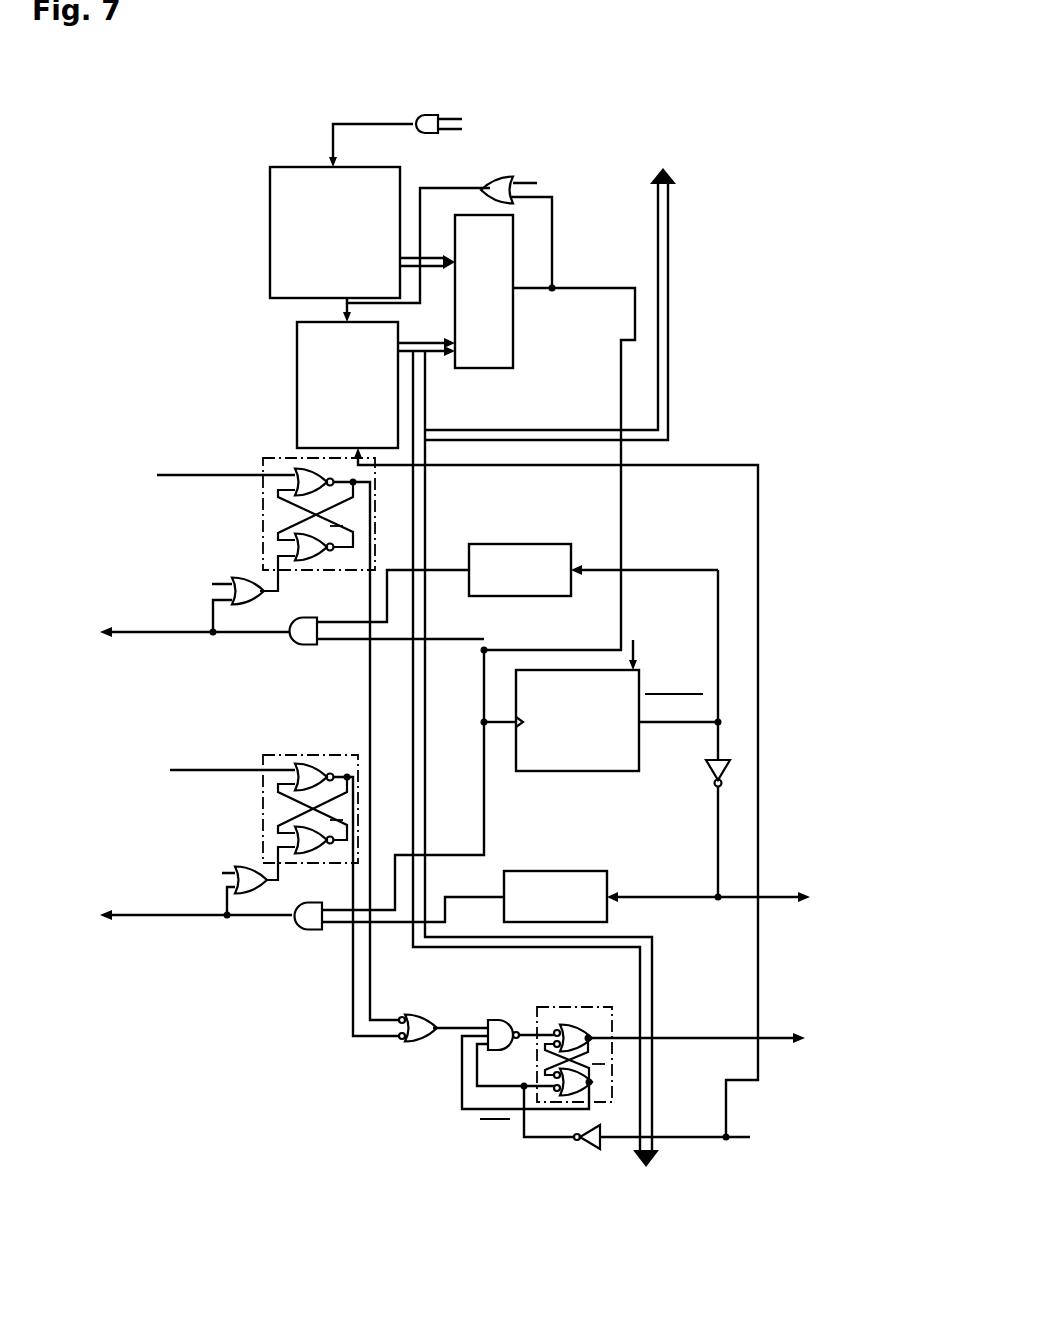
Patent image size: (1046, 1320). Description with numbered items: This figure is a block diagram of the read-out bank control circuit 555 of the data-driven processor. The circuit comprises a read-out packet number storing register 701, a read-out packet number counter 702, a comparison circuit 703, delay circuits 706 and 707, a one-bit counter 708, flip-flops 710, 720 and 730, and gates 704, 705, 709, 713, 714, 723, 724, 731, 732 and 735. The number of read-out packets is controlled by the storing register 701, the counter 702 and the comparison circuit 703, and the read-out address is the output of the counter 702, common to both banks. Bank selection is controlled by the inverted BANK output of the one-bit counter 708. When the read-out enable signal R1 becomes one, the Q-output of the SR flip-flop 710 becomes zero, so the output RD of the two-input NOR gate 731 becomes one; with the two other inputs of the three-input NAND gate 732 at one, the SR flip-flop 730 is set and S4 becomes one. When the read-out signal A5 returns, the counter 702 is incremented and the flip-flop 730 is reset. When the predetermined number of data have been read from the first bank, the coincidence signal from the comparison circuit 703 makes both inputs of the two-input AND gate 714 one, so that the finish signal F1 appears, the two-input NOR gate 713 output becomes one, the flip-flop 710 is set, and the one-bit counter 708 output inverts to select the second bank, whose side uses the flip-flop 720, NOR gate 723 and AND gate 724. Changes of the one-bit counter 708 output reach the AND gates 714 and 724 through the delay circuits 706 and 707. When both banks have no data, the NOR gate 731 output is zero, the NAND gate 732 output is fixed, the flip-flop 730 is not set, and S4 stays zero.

The read-out bank control circuit 555 is at (207, 363).
The read-out packet number storing register 701 is at (290, 166).
The read-out packet number counter 702 is at (296, 352).
The comparison circuit 703 is at (497, 368).
The gate 704 is at (494, 178).
The gate 705 is at (413, 116).
The delay circuit 706 is at (533, 544).
The delay circuit 707 is at (560, 871).
The one-bit counter 708 is at (572, 772).
The gate 709 is at (712, 772).
The SR flip-flop 710 is at (266, 456).
The two-input NOR gate 713 is at (246, 578).
The two-input AND gate 714 is at (308, 618).
The SR flip-flop 720 is at (330, 755).
The two-input NOR gate 723 is at (248, 868).
The two-input AND gate 724 is at (308, 902).
The SR flip-flop 730 is at (595, 990).
The two-input NOR gate 731 is at (410, 1014).
The three-input NAND gate 732 is at (490, 1020).
The gate 735 is at (578, 1142).